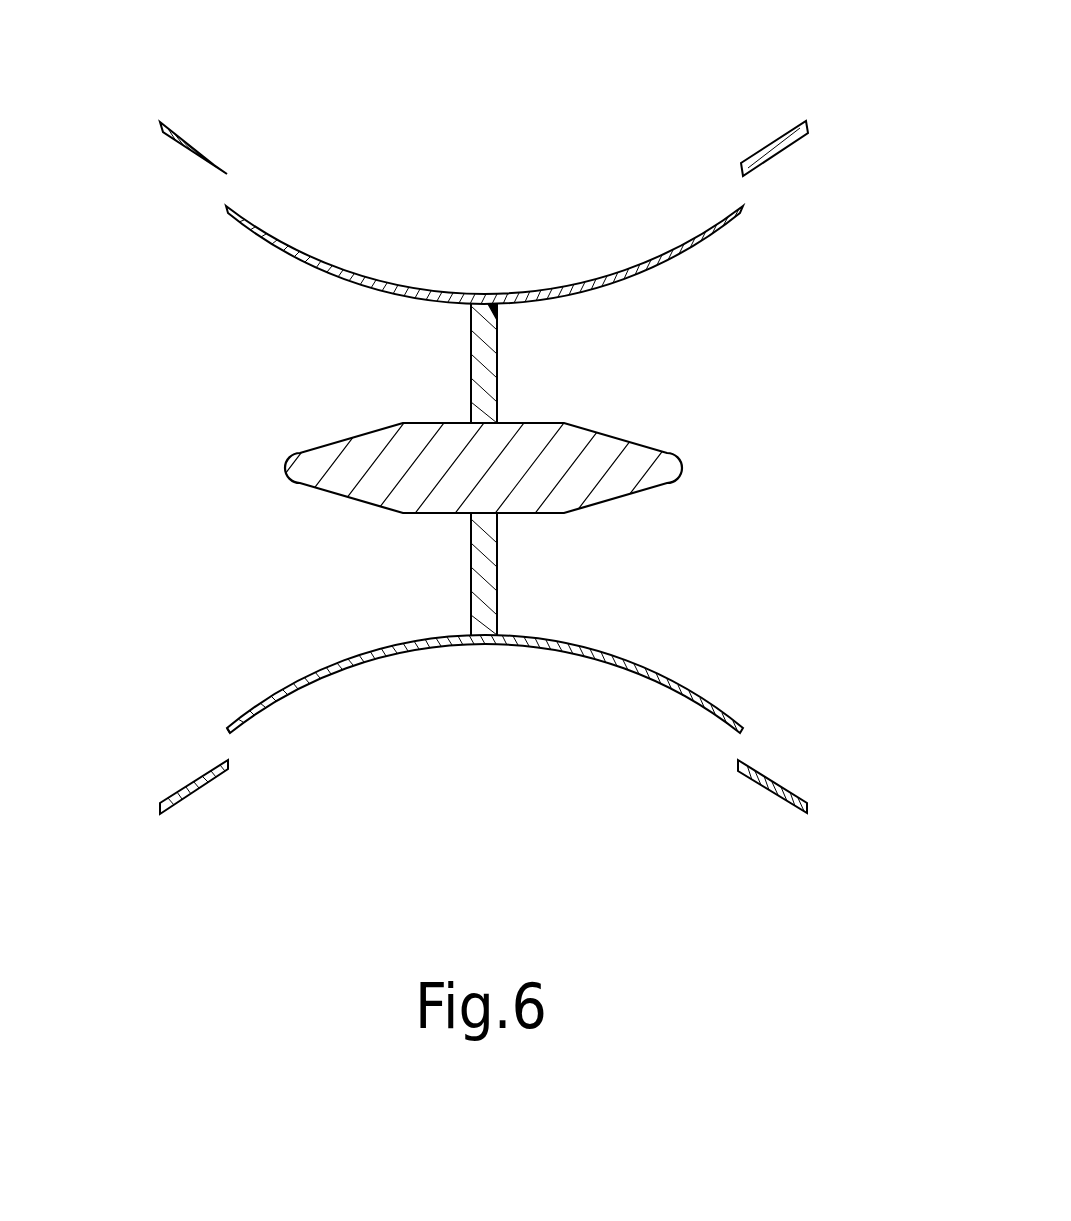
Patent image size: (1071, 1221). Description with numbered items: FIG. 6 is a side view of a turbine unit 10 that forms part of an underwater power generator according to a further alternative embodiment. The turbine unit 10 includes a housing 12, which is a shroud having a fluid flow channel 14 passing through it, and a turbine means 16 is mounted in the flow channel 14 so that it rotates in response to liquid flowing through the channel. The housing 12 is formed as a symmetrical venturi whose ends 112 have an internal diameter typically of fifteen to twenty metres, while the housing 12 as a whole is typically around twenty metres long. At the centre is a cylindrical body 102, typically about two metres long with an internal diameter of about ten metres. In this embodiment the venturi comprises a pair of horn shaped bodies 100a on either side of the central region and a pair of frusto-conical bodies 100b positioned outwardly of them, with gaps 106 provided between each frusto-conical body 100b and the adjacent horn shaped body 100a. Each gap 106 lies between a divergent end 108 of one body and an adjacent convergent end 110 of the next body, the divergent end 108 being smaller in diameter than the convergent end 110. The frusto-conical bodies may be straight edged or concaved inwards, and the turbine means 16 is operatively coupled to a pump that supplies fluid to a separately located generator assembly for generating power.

The turbine unit 10 is at (452, 785).
The housing 12 is at (612, 664).
The fluid flow channel 14 is at (783, 389).
The turbine means 16 is at (497, 602).
The horn shaped body 100a is at (325, 260).
The frusto-conical body 100b is at (197, 152).
The cylindrical body 102 is at (475, 320).
The gap 106 is at (742, 742).
The divergent end 108 is at (225, 728).
The convergent end 110 is at (229, 764).
The ends of the symmetrical venturi 112 is at (822, 644).